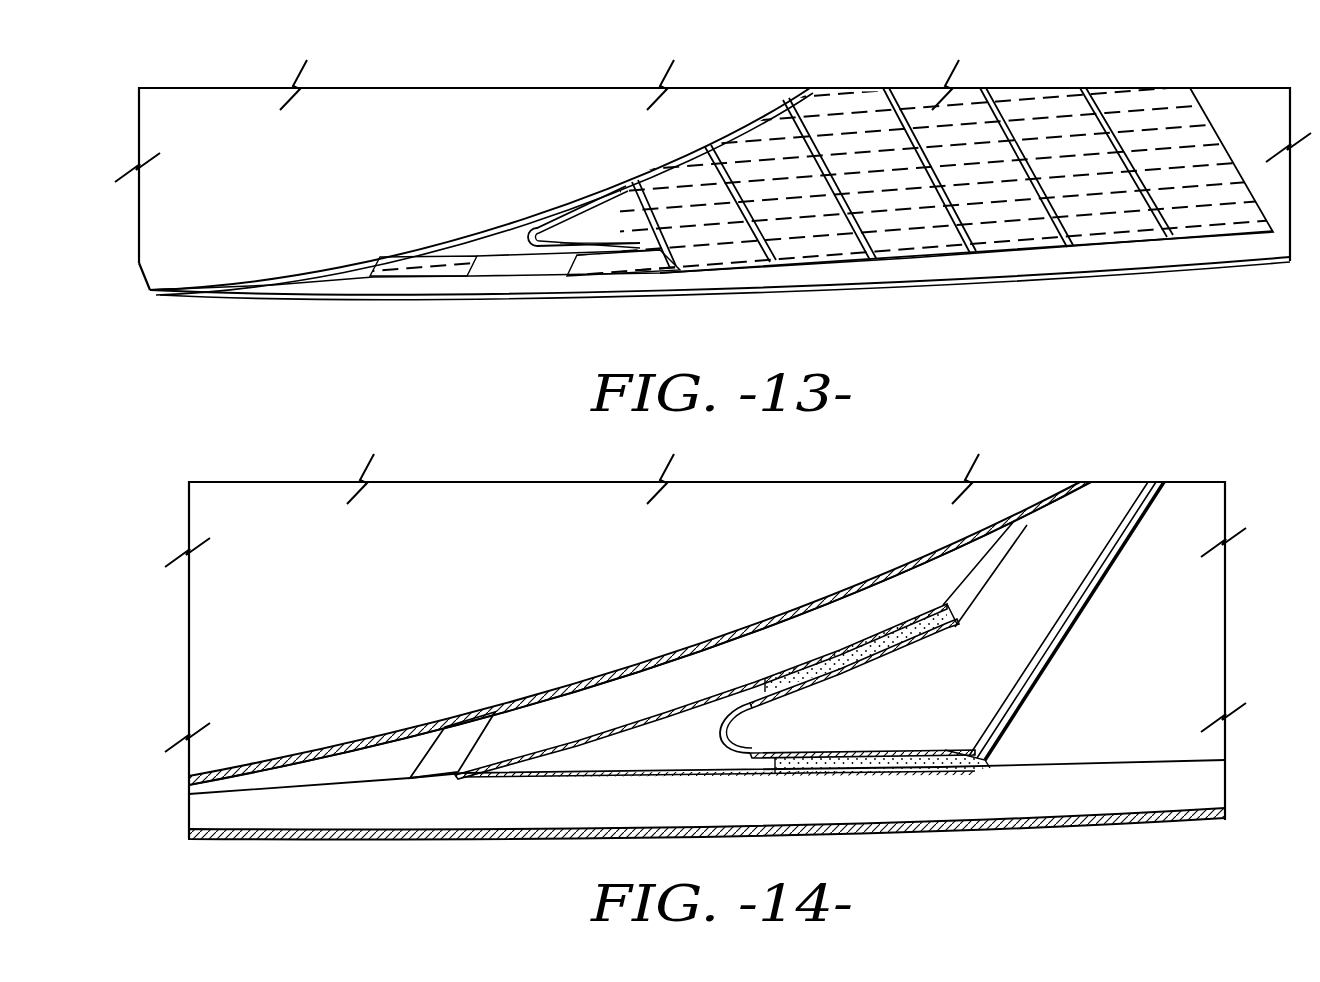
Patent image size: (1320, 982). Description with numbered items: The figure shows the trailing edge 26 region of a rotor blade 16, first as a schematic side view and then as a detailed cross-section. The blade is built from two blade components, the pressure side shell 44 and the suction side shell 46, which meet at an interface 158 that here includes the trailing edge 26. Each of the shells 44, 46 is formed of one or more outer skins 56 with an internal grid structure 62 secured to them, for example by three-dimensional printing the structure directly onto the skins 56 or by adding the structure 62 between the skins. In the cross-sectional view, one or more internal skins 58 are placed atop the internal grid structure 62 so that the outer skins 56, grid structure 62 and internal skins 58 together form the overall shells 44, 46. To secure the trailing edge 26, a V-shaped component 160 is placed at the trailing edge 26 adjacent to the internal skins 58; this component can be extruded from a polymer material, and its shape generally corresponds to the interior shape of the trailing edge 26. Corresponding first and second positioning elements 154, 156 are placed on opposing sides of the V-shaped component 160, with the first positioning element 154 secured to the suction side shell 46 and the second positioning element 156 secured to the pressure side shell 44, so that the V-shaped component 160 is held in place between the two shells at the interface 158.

In FIG. 13, the rotor blade 16 is at (713, 145).
In FIG. 14, the rotor blade 16 is at (705, 609).
In FIG. 13, the trailing edge 26 is at (146, 291).
In FIG. 13, the pressure side shell 44 is at (588, 172).
In FIG. 14, the pressure side shell 44 is at (344, 740).
In FIG. 13, the suction side shell 46 is at (827, 270).
In FIG. 14, the suction side shell 46 is at (489, 842).
In FIG. 13, the outer skin 56 is at (660, 162).
In FIG. 14, the outer skin 56 is at (397, 731).
In FIG. 14, the internal skin 58 is at (1083, 738).
In FIG. 13, the internal grid structure 62 is at (1055, 110).
In FIG. 13, the first positioning element 154 is at (600, 223).
In FIG. 14, the first positioning element 154 is at (890, 760).
In FIG. 13, the second positioning element 156 is at (567, 205).
In FIG. 14, the second positioning element 156 is at (843, 658).
In FIG. 13, the interface 158 is at (420, 313).
In FIG. 14, the interface 158 is at (442, 704).
In FIG. 13, the V-shaped component 160 is at (610, 230).
In FIG. 14, the V-shaped component 160 is at (982, 757).